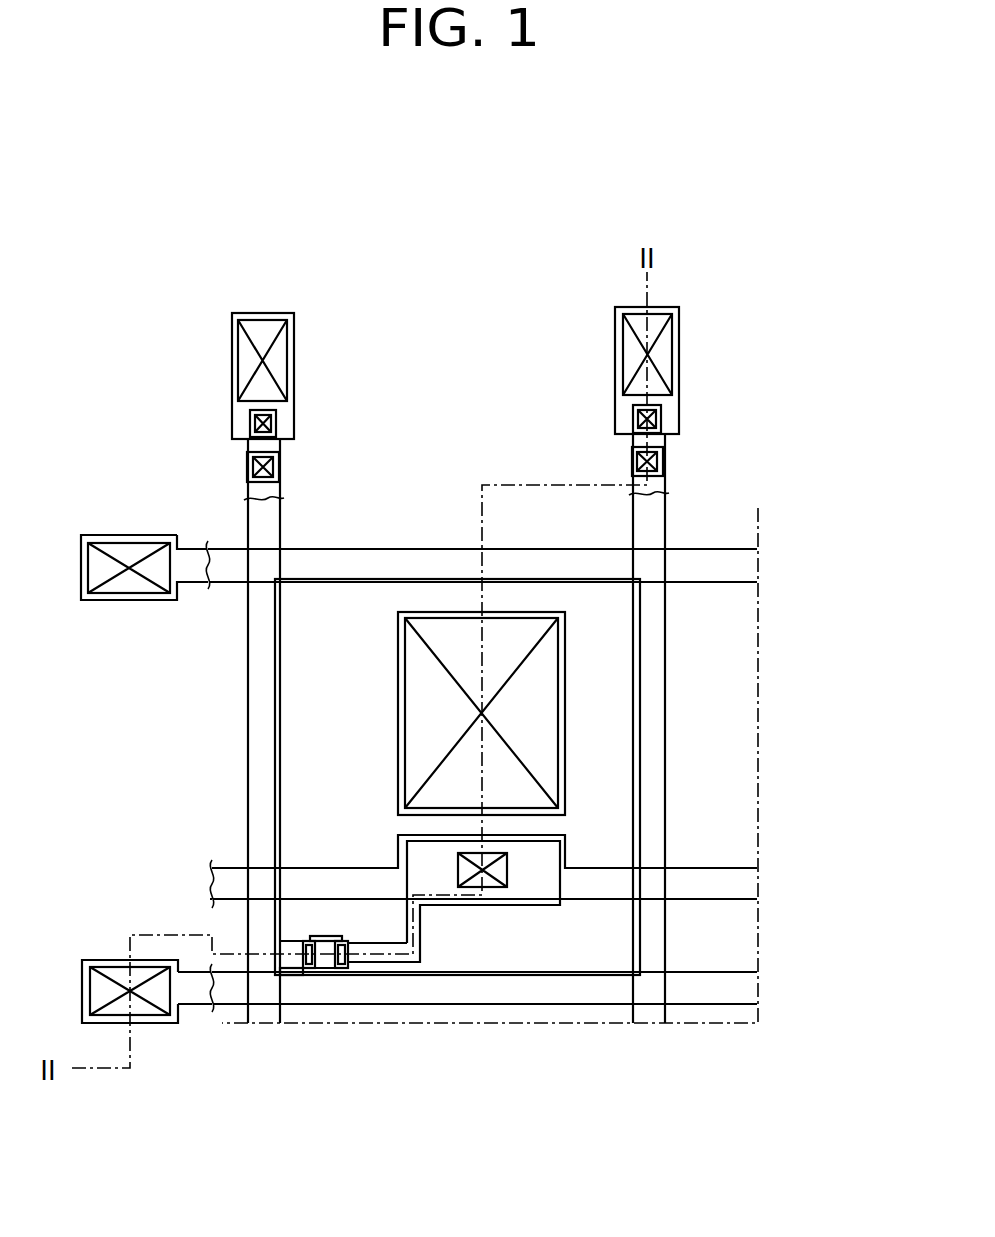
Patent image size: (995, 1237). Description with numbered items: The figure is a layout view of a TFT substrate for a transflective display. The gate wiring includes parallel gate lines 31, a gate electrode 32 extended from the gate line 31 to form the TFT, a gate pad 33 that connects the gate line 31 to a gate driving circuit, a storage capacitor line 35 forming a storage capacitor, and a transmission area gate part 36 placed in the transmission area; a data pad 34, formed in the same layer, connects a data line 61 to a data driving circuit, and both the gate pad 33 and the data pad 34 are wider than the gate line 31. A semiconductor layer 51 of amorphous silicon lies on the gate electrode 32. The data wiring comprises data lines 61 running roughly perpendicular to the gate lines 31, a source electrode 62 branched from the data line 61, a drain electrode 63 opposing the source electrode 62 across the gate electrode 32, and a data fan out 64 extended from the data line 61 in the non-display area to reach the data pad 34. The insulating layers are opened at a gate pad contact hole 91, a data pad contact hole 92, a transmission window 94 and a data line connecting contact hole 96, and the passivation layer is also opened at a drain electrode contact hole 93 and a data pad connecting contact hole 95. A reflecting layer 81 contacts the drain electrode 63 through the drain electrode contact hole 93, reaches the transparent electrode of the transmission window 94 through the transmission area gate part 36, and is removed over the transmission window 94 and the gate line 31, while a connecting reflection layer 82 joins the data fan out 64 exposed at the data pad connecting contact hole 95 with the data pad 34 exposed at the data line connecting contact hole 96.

The gate line 31 is at (422, 990).
The gate electrode 32 is at (328, 975).
The gate pad 33 is at (178, 1023).
The data pad 34 is at (615, 345).
The storage capacitor line 35 is at (380, 890).
The transmission area gate part 36 is at (565, 715).
The semiconductor layer 51 is at (340, 936).
The data line 61 is at (248, 733).
The source electrode 62 is at (293, 968).
The drain electrode 63 is at (547, 910).
The data fan out 64 is at (665, 478).
The reflecting layer 81 is at (640, 667).
The connecting reflection layer 82 is at (661, 416).
The gate pad contact hole 91 is at (100, 960).
The data pad contact hole 92 is at (672, 340).
The drain electrode contact hole 93 is at (490, 887).
The transmission window 94 is at (558, 765).
The data pad connecting contact hole 95 is at (632, 466).
The data line connecting contact hole 96 is at (633, 418).